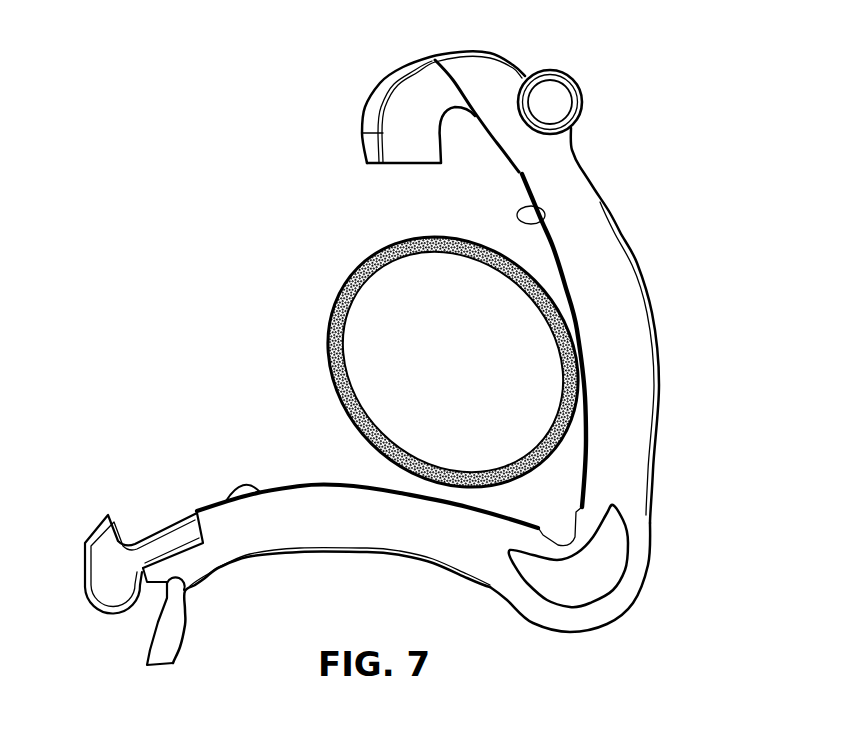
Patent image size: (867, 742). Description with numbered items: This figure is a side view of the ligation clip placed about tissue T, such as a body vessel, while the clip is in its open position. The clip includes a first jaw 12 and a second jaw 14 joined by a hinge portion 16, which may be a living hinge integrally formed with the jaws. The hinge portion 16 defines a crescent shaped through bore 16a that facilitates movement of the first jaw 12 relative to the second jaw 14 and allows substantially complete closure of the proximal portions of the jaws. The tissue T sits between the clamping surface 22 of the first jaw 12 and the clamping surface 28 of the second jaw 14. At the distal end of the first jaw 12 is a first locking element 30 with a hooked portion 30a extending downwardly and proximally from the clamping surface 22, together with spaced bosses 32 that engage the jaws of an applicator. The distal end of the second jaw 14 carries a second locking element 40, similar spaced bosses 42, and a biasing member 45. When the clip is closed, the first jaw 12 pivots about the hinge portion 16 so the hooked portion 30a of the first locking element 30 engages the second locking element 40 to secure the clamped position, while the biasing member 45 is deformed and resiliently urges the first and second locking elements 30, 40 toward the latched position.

The first jaw 12 is at (664, 305).
The second jaw 14 is at (312, 565).
The hinge portion 16 is at (624, 622).
The crescent shaped through bore 16a is at (600, 573).
The clamping surface 22 is at (545, 217).
The clamping surface 28 is at (260, 493).
The first locking element 30 is at (359, 102).
The hooked portion 30a is at (413, 153).
The bosses 32 is at (552, 100).
The second locking element 40 is at (152, 580).
The bosses 42 is at (107, 590).
The biasing member 45 is at (165, 652).
The tissue T is at (328, 333).